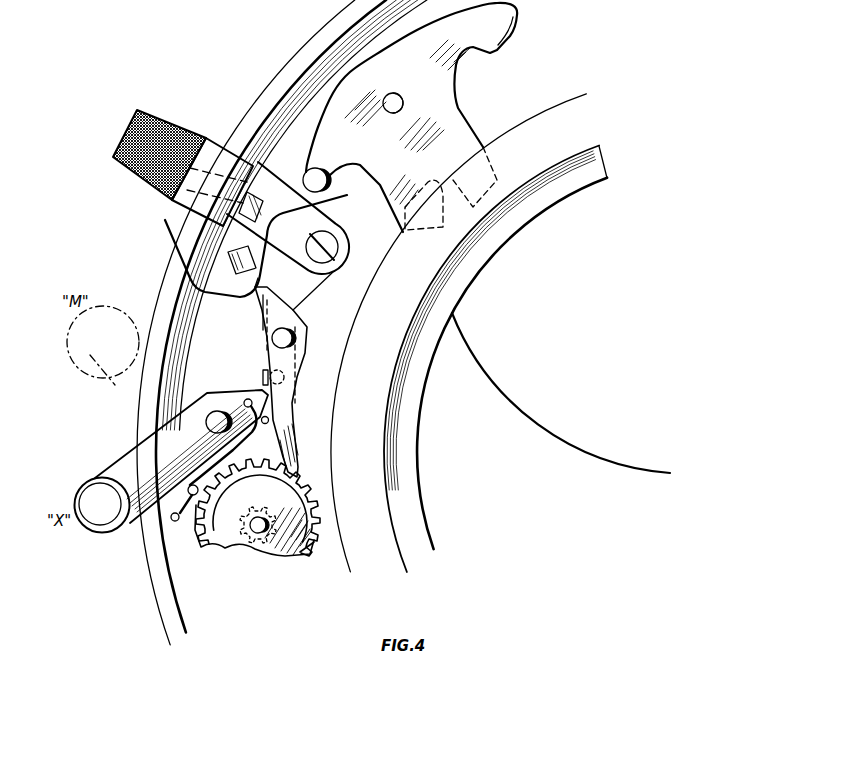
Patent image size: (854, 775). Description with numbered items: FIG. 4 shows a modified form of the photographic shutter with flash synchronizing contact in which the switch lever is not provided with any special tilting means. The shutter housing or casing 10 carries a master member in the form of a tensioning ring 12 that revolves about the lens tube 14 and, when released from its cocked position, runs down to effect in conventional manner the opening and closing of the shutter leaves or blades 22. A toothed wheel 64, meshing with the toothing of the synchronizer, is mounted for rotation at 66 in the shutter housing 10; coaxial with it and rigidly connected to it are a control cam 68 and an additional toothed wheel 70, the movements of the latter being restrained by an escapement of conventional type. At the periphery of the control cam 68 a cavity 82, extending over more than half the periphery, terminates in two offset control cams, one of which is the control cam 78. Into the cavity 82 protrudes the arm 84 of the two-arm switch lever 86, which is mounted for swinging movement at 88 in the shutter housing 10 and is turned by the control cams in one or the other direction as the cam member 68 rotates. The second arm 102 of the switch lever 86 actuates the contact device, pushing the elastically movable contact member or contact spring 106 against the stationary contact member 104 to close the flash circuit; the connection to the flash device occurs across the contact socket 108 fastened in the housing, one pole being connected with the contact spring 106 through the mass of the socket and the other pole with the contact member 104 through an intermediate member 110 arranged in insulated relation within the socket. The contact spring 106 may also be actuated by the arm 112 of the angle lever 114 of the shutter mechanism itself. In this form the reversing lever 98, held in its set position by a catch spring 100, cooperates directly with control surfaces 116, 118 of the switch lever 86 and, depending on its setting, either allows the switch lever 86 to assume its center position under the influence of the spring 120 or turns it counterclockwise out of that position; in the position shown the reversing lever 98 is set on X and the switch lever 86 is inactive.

The shutter housing 10 is at (304, 50).
The tensioning ring 12 is at (458, 333).
The lens tube 14 is at (497, 238).
The shutter leaves 22 is at (611, 468).
The toothed wheel 64 is at (270, 556).
The rotation mount 66 is at (241, 541).
The control cam 68 is at (297, 555).
The additional toothed wheel 70 is at (320, 536).
The control cam 78 is at (303, 502).
The cavity 82 is at (200, 538).
The arm 84 is at (300, 453).
The switch lever 86 is at (263, 327).
The swinging mount 88 is at (288, 335).
The reversing lever 98 is at (88, 486).
The catch spring 100 is at (222, 453).
The second arm 102 is at (228, 258).
The stationary contact member 104 is at (268, 262).
The contact spring 106 is at (347, 198).
The contact socket 108 is at (185, 140).
The intermediate member 110 is at (172, 208).
The arm 112 is at (327, 175).
The angle lever 114 is at (440, 114).
The control surface 116 is at (281, 450).
The control surface 118 is at (268, 419).
The spring 120 is at (268, 372).